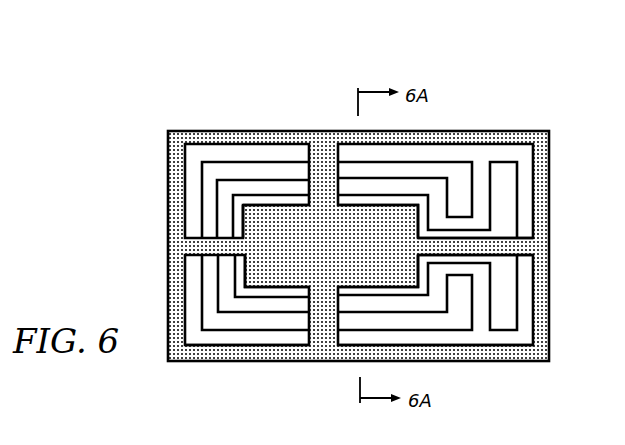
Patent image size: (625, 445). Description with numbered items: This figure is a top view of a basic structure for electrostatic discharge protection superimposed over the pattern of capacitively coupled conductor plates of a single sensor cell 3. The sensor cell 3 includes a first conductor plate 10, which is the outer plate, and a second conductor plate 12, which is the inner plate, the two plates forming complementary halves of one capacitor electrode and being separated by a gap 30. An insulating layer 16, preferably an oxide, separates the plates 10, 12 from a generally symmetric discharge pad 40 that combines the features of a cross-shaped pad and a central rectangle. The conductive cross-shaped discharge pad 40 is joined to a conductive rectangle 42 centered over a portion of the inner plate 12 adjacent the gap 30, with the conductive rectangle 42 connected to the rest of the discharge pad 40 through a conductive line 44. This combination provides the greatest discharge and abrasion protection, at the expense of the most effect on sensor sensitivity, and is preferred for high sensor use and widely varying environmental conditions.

The sensor cell 3 is at (289, 83).
The first conductor plate 10 is at (460, 162).
The second conductor plate 12 is at (500, 162).
The insulating layer 16 is at (503, 357).
The gap 30 is at (227, 205).
The discharge pad 40 is at (212, 133).
The conductive rectangle 42 is at (337, 260).
The conductive line 44 is at (527, 245).